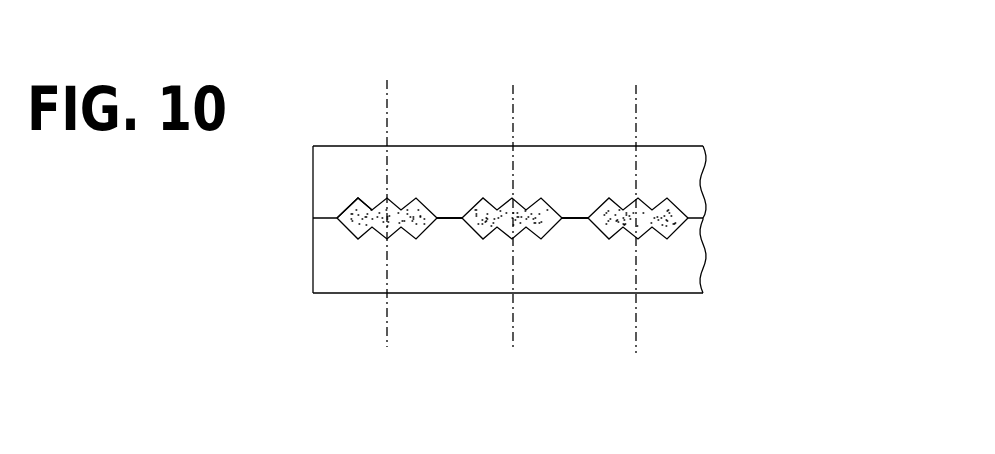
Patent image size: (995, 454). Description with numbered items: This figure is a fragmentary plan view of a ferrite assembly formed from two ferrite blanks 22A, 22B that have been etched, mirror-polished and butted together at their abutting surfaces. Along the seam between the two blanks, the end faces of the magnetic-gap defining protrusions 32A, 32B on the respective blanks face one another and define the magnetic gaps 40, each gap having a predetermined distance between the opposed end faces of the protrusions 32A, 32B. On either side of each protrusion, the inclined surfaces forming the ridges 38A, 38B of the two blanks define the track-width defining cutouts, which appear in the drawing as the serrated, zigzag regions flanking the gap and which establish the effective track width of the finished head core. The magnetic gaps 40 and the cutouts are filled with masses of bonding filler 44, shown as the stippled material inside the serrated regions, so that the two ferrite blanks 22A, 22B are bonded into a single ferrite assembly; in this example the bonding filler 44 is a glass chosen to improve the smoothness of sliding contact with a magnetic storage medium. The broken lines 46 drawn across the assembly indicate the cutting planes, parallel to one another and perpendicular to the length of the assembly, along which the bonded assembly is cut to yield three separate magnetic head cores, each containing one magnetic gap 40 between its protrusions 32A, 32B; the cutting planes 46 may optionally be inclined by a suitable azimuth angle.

The ferrite blank 22A is at (697, 170).
The ferrite blank 22B is at (690, 268).
The magnetic gap 40 is at (450, 216).
The ridge 38A is at (405, 198).
The ridge 38B is at (403, 240).
The magnetic-gap defining protrusion 32A is at (462, 212).
The magnetic-gap defining protrusion 32B is at (450, 228).
The cutting plane 46 is at (387, 118).
The bonding filler 44 is at (357, 222).